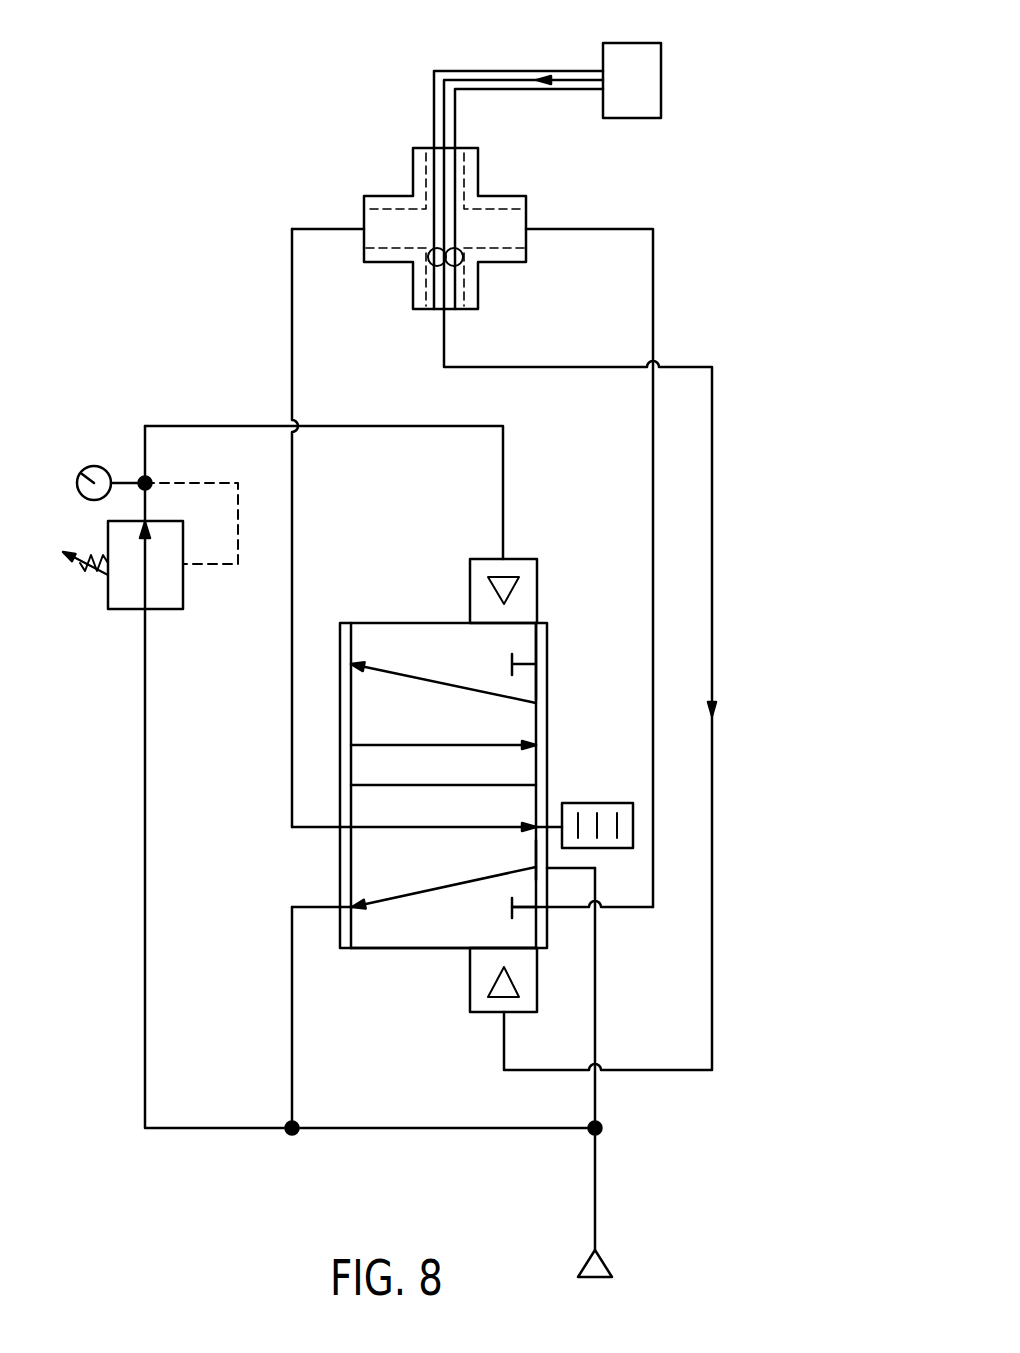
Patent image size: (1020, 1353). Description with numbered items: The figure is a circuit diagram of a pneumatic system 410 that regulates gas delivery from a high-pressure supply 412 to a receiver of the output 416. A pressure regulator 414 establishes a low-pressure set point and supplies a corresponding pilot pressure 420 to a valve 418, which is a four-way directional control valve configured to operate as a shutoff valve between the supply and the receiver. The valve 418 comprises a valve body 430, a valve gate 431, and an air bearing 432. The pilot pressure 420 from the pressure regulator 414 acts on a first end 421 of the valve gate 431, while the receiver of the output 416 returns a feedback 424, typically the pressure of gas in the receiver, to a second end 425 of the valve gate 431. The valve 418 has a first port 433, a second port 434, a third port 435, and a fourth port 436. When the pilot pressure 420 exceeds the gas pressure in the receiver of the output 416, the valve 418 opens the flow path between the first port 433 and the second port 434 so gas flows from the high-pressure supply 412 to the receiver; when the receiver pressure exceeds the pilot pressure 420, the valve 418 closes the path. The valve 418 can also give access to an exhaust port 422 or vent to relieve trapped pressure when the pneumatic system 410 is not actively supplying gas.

The pneumatic system 410 is at (246, 200).
The high-pressure supply 412 is at (603, 1258).
The pressure regulator 414 is at (123, 610).
The receiver of the output 416 is at (663, 95).
The valve 418 is at (469, 522).
The pilot pressure 420 is at (532, 583).
The first end 421 is at (447, 607).
The exhaust port 422 is at (625, 802).
The feedback 424 is at (475, 980).
The second end 425 is at (380, 958).
The valve body 430 is at (548, 668).
The valve gate 431 is at (430, 630).
The air bearing 432 is at (542, 628).
The first port 433 is at (547, 858).
The second port 434 is at (340, 830).
The third port 435 is at (340, 907).
The fourth port 436 is at (550, 908).